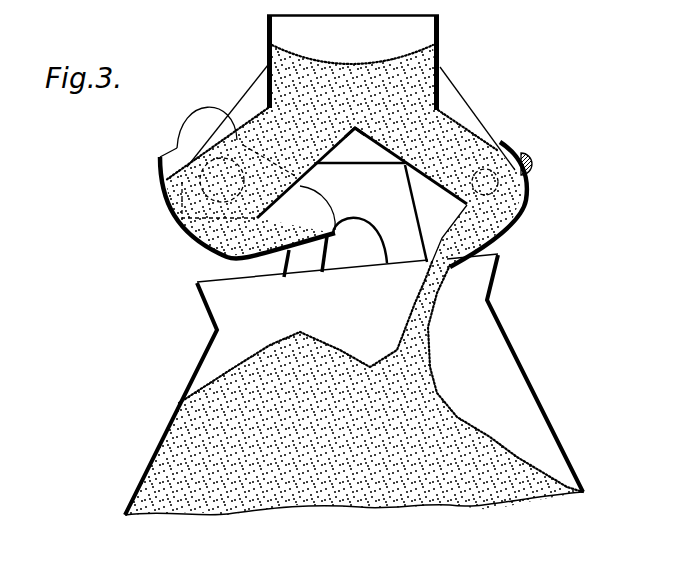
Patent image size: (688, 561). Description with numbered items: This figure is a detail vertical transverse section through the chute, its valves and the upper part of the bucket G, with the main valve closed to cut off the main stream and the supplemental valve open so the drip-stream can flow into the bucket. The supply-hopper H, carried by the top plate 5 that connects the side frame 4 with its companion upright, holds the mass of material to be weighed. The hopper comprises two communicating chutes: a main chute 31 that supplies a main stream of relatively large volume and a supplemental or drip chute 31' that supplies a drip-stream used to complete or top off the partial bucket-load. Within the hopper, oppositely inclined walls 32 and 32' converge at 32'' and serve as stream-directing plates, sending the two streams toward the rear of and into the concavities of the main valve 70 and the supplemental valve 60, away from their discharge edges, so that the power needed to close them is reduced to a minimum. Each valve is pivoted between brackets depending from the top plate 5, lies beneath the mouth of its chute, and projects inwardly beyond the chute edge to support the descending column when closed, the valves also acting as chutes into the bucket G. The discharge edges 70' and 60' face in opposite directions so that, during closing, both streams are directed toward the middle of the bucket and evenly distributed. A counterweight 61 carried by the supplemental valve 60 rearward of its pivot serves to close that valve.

The supply-hopper H is at (364, 62).
The main chute 31 is at (228, 141).
The supplemental or drip chute 31' is at (477, 131).
The stream-directing plate 32 is at (306, 173).
The stream-directing plate 32' is at (411, 195).
The converging point of the walls 32'' is at (356, 90).
The top plate 5 is at (360, 165).
The side frame or upright 4 is at (308, 262).
The main valve 70 is at (247, 216).
The discharge edge of the main valve 70' is at (343, 224).
The supplemental valve 60 is at (490, 204).
The discharge edge of the supplemental valve 60' is at (454, 245).
The counterweight 61 is at (535, 166).
The bucket G is at (354, 385).